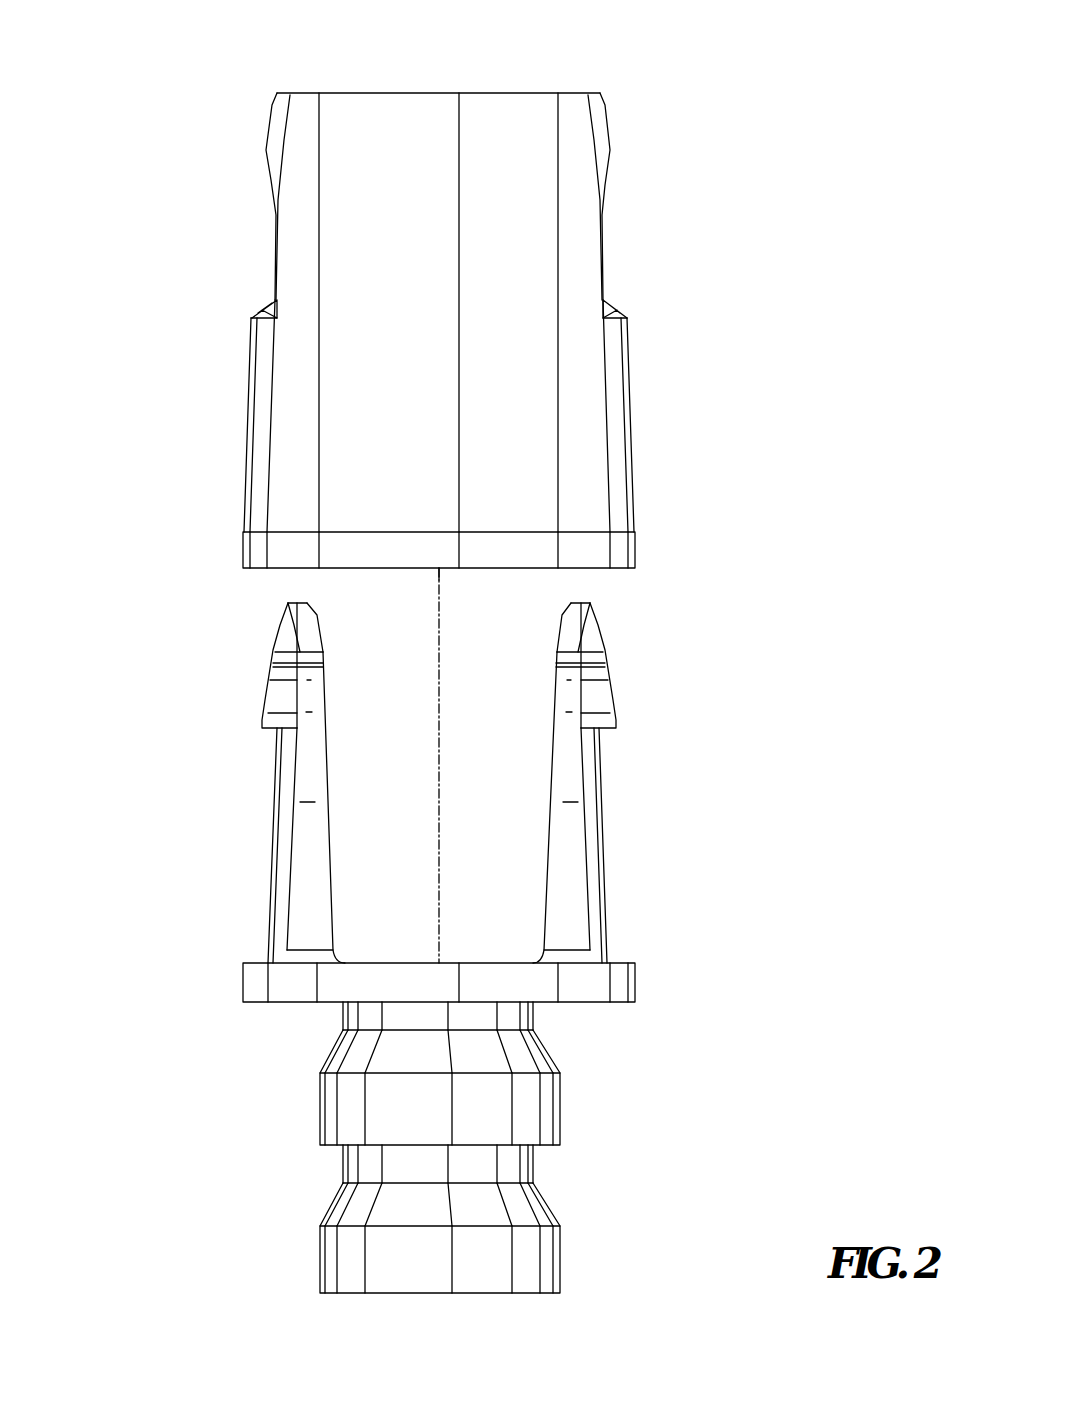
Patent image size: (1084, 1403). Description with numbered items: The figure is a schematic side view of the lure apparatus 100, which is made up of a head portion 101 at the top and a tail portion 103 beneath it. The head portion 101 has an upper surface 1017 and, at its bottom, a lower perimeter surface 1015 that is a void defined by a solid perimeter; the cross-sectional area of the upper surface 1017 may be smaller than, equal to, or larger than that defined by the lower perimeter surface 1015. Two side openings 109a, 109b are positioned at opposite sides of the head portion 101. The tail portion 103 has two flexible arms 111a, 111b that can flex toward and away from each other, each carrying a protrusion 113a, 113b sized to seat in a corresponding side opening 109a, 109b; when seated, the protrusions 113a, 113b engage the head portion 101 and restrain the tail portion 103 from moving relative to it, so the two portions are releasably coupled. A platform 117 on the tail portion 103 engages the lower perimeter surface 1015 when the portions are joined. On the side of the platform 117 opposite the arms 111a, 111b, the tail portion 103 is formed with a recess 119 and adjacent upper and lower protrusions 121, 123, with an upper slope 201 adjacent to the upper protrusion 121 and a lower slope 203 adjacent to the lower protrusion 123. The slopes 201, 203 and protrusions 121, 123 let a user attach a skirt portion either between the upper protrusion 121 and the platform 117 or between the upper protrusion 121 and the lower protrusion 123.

The lure apparatus 100 is at (902, 183).
The head portion 101 is at (340, 143).
The upper surface 1017 is at (582, 90).
The side opening 109a is at (268, 262).
The side opening 109b is at (610, 220).
The lower perimeter surface 1015 is at (615, 570).
The tail portion 103 is at (247, 765).
The protrusion 113a is at (285, 640).
The protrusion 113b is at (597, 633).
The arm 111a is at (312, 863).
The arm 111b is at (575, 857).
The platform 117 is at (587, 977).
The recess 119 is at (330, 1173).
The upper slope 201 is at (513, 1043).
The upper protrusion 121 is at (520, 1108).
The lower slope 203 is at (517, 1193).
The lower protrusion 123 is at (532, 1258).